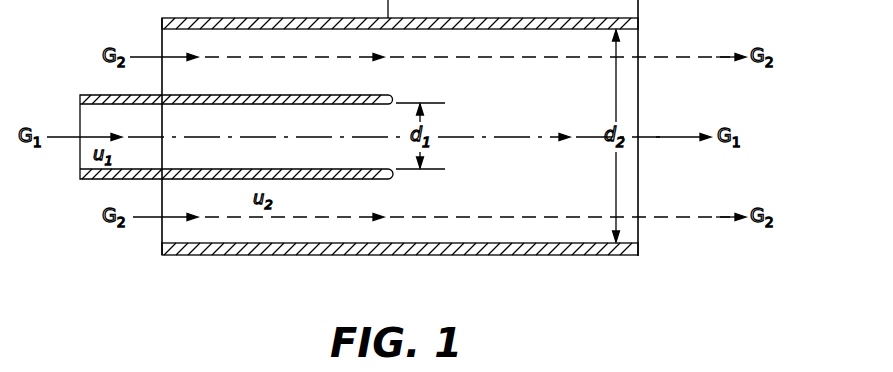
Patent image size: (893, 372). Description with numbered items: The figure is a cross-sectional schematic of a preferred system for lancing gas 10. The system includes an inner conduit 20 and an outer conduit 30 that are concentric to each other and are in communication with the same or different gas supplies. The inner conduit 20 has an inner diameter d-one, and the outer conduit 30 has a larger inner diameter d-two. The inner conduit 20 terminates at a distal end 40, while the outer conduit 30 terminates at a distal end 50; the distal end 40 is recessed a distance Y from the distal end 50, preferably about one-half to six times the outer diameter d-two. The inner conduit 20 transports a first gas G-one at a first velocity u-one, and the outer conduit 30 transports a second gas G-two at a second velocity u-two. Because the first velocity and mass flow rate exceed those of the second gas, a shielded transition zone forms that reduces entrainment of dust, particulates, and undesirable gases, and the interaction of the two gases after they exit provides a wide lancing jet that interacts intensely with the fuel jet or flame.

The system for lancing gas 10 is at (168, 259).
The inner conduit 20 is at (83, 184).
The outer conduit 30 is at (366, 259).
The distal end of inner conduit 40 is at (397, 92).
The distal end of outer conduit 50 is at (647, 260).